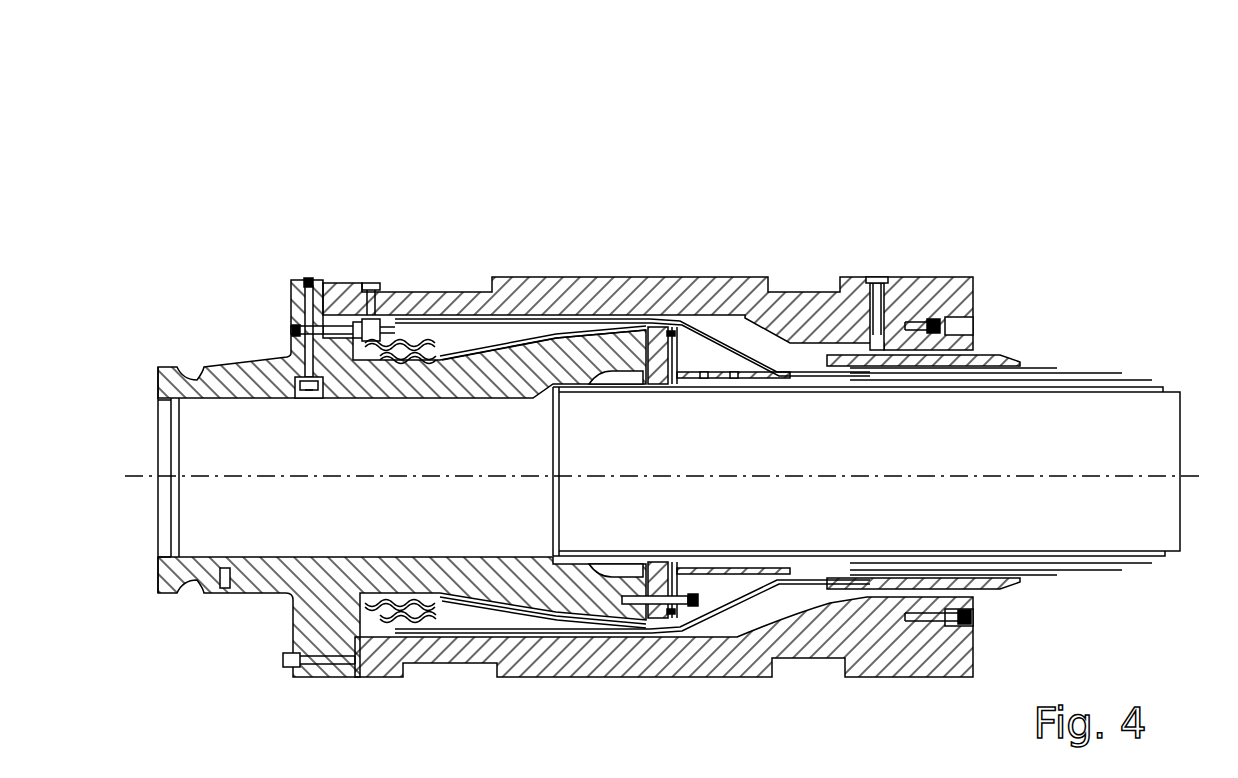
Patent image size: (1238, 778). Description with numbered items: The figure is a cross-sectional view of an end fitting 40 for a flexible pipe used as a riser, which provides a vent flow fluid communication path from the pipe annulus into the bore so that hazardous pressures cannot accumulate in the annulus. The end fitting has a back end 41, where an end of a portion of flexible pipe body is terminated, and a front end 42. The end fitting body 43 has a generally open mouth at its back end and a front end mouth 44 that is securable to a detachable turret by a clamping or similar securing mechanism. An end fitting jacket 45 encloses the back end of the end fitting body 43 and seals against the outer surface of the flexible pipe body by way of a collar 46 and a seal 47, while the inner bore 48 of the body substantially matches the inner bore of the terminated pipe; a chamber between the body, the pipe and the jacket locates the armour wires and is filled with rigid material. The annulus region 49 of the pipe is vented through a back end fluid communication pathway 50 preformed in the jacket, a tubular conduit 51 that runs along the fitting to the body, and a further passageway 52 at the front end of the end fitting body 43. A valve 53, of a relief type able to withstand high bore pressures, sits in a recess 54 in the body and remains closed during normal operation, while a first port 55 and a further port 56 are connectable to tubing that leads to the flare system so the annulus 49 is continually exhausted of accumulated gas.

The end fitting 40 is at (375, 148).
The back end 41 is at (947, 183).
The front end 42 is at (181, 328).
The end fitting body 43 is at (300, 616).
The front end mouth 44 is at (145, 540).
The end fitting jacket 45 is at (690, 675).
The collar 46 is at (918, 368).
The seal 47 is at (945, 328).
The inner bore 48 is at (517, 465).
The annulus region 49 is at (856, 387).
The back end fluid communication pathway 50 is at (873, 338).
The tubular conduit 51 is at (732, 315).
The further passageway 52 is at (348, 300).
The valve 53 is at (312, 401).
The recess 54 is at (298, 388).
The first port 55 is at (292, 330).
The further port 56 is at (308, 278).